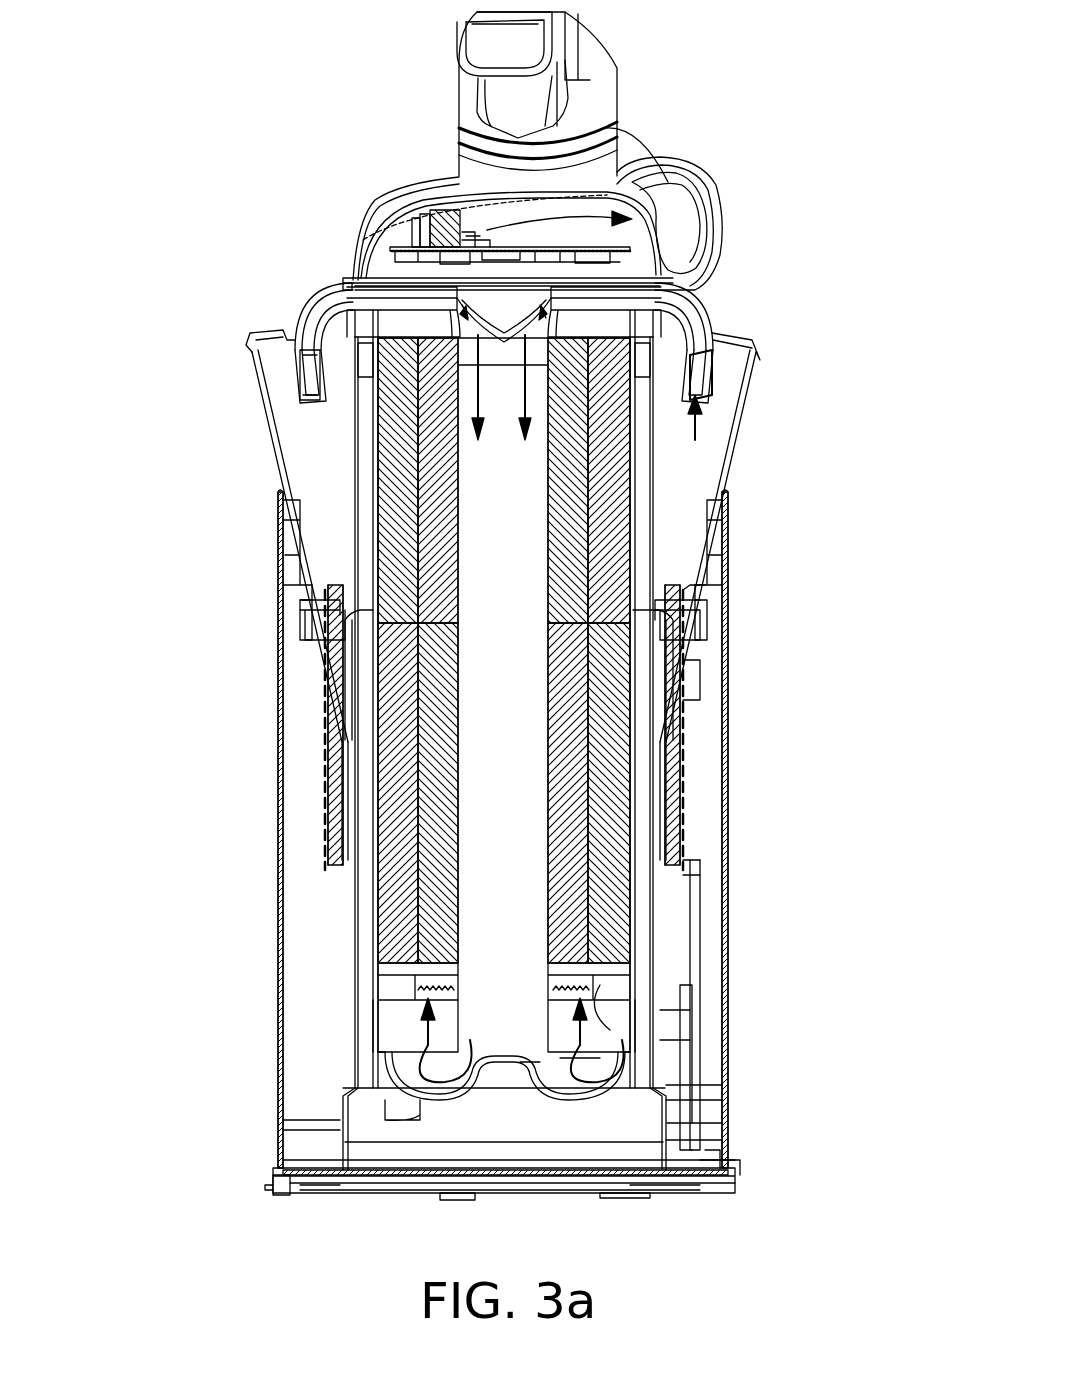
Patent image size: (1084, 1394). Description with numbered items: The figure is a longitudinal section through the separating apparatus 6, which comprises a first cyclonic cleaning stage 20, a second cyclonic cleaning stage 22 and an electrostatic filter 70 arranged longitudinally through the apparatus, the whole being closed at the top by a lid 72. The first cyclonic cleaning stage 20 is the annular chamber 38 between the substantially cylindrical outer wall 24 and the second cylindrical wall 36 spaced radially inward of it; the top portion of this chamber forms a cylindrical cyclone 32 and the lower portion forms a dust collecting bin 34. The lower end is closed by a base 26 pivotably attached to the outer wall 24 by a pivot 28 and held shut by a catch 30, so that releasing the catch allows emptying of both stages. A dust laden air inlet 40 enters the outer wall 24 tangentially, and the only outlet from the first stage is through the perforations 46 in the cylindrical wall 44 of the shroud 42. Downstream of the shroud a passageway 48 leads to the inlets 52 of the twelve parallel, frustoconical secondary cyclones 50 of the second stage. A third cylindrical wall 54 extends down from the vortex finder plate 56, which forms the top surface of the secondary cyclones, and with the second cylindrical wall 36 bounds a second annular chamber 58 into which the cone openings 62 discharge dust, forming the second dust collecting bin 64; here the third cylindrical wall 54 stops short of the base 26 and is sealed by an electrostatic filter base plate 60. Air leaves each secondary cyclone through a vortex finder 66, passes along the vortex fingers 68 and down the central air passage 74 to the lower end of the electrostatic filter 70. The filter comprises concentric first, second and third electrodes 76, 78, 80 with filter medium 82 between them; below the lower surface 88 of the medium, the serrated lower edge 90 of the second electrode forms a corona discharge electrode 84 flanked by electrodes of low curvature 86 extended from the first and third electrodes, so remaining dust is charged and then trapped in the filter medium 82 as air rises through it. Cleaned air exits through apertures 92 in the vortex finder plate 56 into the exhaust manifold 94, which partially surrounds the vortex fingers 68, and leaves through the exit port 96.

The separating apparatus 6 is at (340, 122).
The first cyclonic cleaning stage 20 is at (755, 768).
The second cyclonic cleaning stage 22 is at (255, 462).
The outer wall 24 is at (725, 848).
The base 26 is at (540, 1187).
The pivot 28 is at (730, 1175).
The catch 30 is at (320, 1180).
The cylindrical cyclone 32 is at (700, 730).
The dust collecting bin 34 is at (705, 1098).
The second cylindrical wall 36 is at (650, 1010).
The annular chamber 38 is at (685, 985).
The dust laden air inlet 40 is at (305, 602).
The shroud 42 is at (686, 665).
The cylindrical wall 44 is at (705, 680).
The perforations 46 is at (705, 790).
The passageway 48 is at (640, 530).
The secondary cyclones 50 is at (715, 428).
The inlets 52 is at (290, 395).
The third cylindrical wall 54 is at (630, 920).
The vortex finder plate 56 is at (690, 315).
The second annular chamber 58 is at (690, 1040).
The electrostatic filter base plate 60 is at (420, 1090).
The cone opening 62 is at (660, 598).
The second dust collecting bin 64 is at (700, 1085).
The vortex finder 66 is at (720, 340).
The vortex fingers 68 is at (347, 326).
The electrostatic filter 70 is at (580, 1055).
The lid 72 is at (442, 186).
The air passage 74 is at (520, 574).
The first electrode 76 is at (395, 893).
The second electrode 78 is at (430, 935).
The third electrode 80 is at (420, 980).
The filter medium 82 is at (400, 870).
The corona discharge electrode 84 is at (425, 995).
The electrodes of low curvature 86 is at (385, 1005).
The lower surface 88 is at (590, 985).
The serrated lower edge 90 is at (520, 1062).
The apertures 92 is at (620, 305).
The exhaust manifold 94 is at (583, 206).
The exit port 96 is at (700, 180).